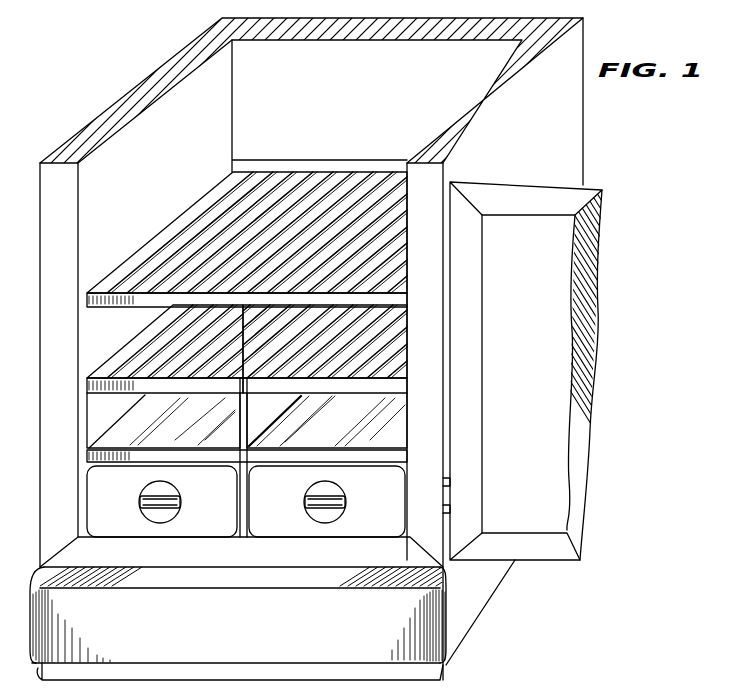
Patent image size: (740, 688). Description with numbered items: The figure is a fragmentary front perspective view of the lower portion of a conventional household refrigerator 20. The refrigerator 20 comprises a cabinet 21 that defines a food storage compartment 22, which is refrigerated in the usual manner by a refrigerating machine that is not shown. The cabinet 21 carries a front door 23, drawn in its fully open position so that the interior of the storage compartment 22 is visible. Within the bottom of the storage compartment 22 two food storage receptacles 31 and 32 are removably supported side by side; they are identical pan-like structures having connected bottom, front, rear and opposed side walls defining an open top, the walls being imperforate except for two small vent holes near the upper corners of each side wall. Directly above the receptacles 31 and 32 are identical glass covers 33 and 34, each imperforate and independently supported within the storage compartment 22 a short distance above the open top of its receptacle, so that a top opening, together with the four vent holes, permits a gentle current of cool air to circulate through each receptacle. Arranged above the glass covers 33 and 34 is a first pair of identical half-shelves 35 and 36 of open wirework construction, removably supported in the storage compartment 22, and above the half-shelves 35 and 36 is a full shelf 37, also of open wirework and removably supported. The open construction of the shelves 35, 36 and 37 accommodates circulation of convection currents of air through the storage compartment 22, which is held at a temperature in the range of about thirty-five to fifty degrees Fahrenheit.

The household refrigerator 20 is at (108, 82).
The cabinet 21 is at (44, 177).
The food storage compartment 22 is at (296, 129).
The front door 23 is at (612, 232).
The food storage receptacle 31 is at (162, 501).
The food storage receptacle 32 is at (327, 501).
The glass cover 33 is at (163, 420).
The glass cover 34 is at (327, 420).
The half-shelf 35 is at (87, 384).
The half-shelf 36 is at (407, 385).
The full shelf 37 is at (86, 295).